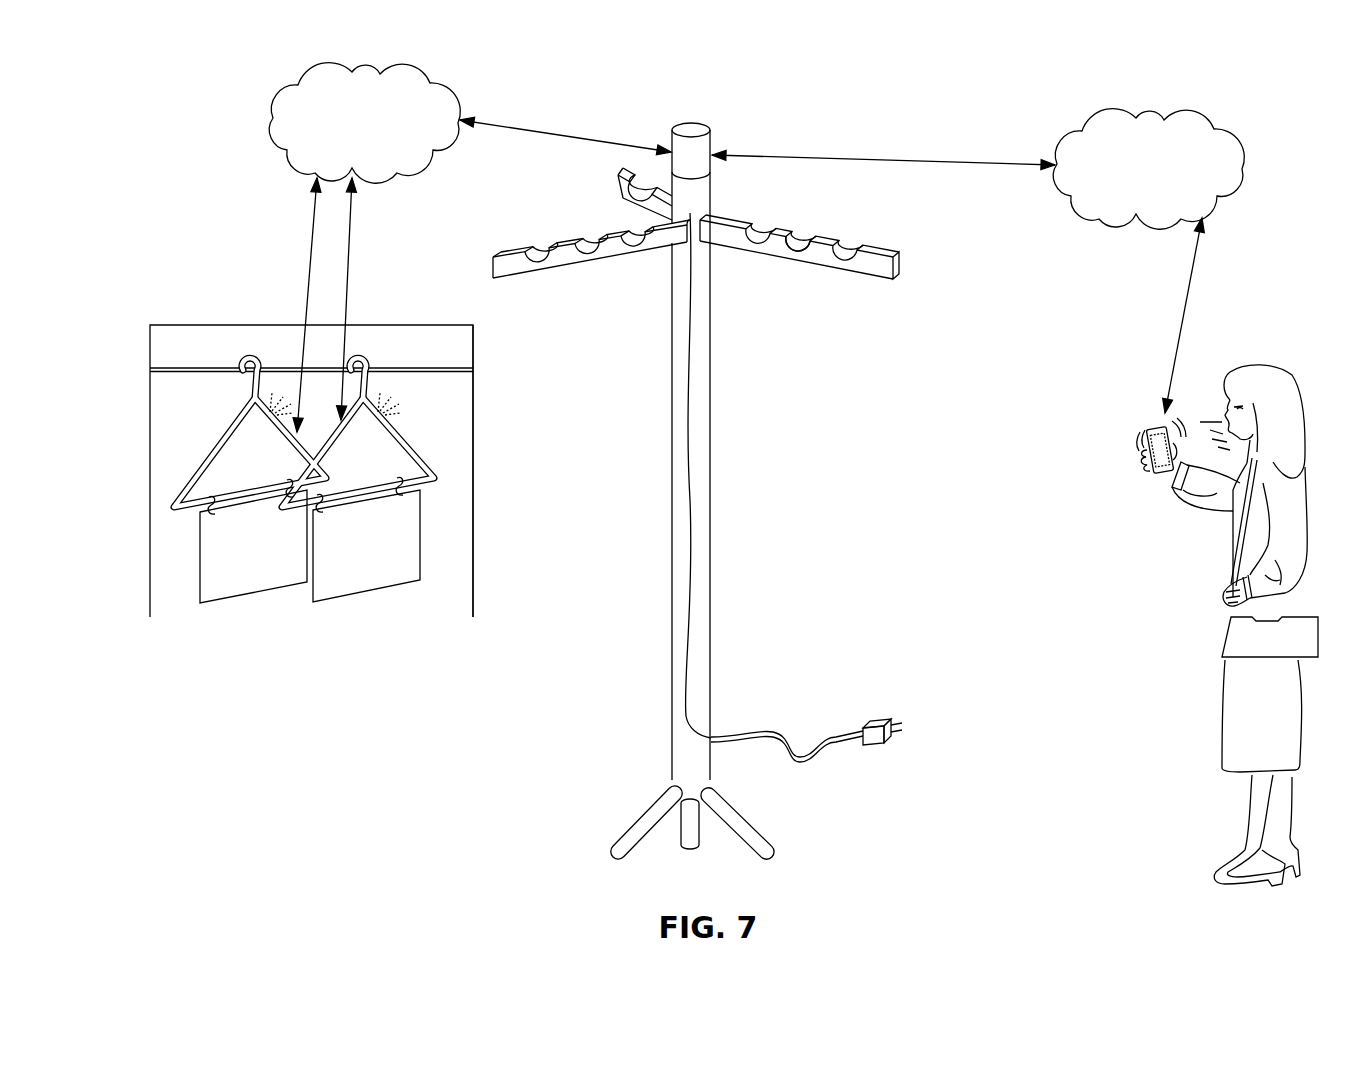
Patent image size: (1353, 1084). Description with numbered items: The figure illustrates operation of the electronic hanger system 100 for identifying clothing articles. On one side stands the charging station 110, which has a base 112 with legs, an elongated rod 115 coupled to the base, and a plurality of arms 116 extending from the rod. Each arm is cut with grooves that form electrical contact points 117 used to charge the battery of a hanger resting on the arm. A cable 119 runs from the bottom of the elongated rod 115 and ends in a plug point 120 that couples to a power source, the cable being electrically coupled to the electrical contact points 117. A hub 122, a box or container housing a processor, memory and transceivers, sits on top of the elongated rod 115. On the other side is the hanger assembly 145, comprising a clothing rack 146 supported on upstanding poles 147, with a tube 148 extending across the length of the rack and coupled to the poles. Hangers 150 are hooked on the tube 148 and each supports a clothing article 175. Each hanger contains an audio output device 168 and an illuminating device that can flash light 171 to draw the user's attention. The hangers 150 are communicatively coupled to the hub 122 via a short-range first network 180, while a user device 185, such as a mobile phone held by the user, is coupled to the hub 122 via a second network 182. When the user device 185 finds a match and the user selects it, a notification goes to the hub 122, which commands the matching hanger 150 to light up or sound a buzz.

The electronic hanger system 100 is at (425, 720).
The charging station 110 is at (630, 584).
The base 112 is at (733, 822).
The elongated rod 115 is at (711, 515).
The arms 116 is at (890, 262).
The electrical contact points 117 is at (800, 250).
The cable 119 is at (770, 732).
The plug point 120 is at (873, 722).
The hub 122 is at (712, 146).
The hanger assembly 145 is at (205, 245).
The clothing rack 146 is at (185, 325).
The upstanding poles 147 is at (473, 508).
The tube 148 is at (292, 372).
The hangers 150 is at (195, 473).
The audio output device 168 is at (225, 422).
The light 171 is at (397, 403).
The clothing article 175 is at (227, 603).
The first network 180 is at (273, 120).
The second network 182 is at (1148, 110).
The user device 185 is at (1147, 425).